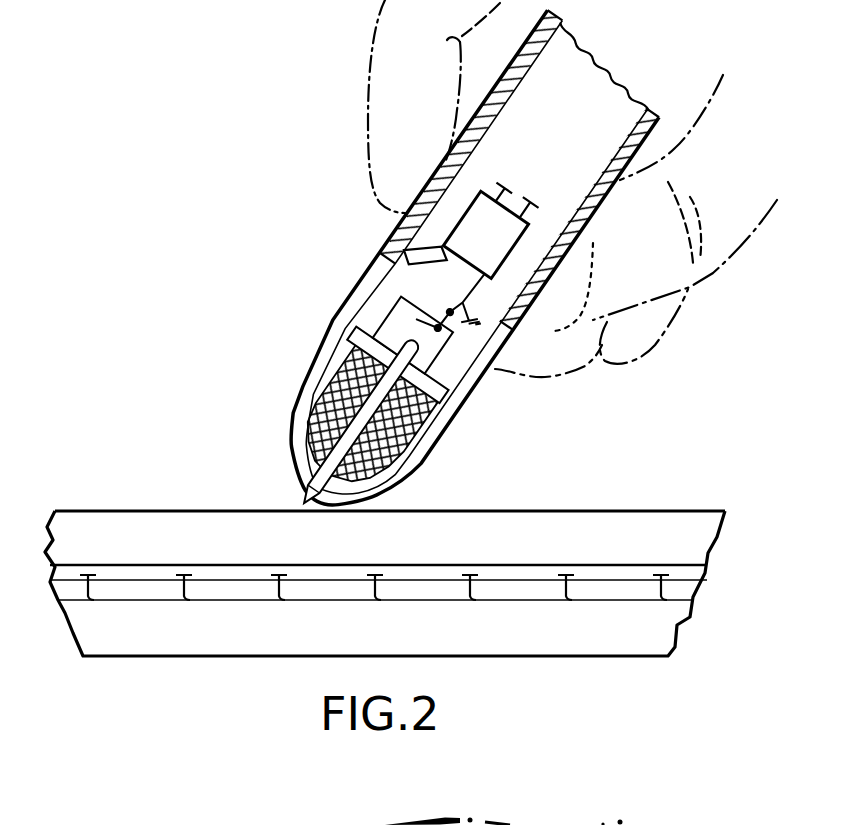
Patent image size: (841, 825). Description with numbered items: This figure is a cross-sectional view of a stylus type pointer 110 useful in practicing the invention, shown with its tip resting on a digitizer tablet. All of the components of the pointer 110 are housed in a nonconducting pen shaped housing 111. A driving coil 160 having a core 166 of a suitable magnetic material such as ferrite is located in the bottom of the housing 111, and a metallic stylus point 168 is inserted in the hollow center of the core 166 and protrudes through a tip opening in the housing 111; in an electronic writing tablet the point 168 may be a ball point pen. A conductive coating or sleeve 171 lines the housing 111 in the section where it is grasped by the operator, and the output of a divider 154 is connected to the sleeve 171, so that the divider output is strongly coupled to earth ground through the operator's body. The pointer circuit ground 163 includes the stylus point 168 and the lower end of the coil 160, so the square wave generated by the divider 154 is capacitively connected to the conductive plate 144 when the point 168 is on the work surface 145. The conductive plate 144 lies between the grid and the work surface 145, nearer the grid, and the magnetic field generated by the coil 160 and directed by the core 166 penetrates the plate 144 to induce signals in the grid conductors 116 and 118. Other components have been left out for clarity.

The pointer 110 is at (441, 273).
The housing 111 is at (377, 262).
The conductors of the x grid 116 is at (622, 599).
The grid conductors 118 is at (712, 575).
The conductive plate 144 is at (148, 565).
The work surface 145 is at (147, 511).
The divider 154 is at (507, 210).
The driving coil 160 is at (330, 383).
The pointer circuit ground 163 is at (451, 310).
The core 166 is at (362, 330).
The stylus point 168 is at (302, 493).
The conductive coating or sleeve 171 is at (553, 63).